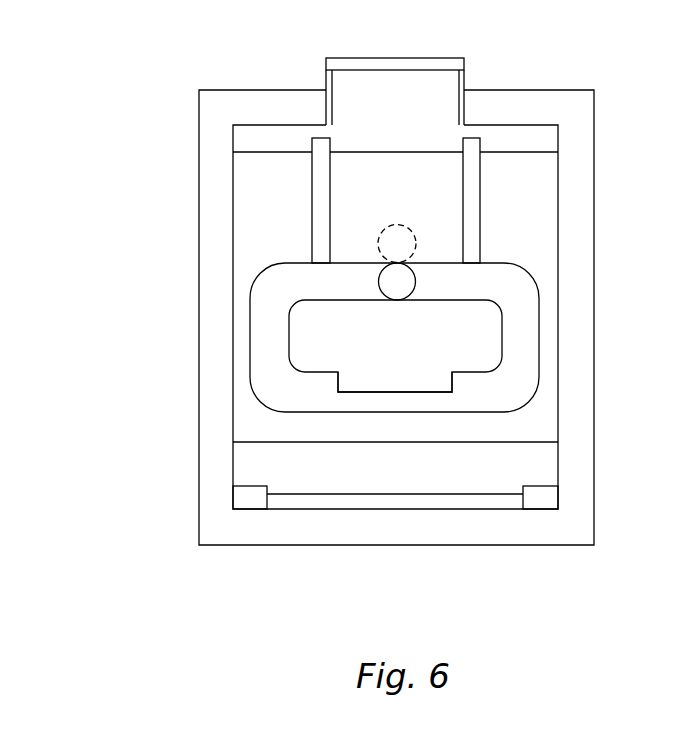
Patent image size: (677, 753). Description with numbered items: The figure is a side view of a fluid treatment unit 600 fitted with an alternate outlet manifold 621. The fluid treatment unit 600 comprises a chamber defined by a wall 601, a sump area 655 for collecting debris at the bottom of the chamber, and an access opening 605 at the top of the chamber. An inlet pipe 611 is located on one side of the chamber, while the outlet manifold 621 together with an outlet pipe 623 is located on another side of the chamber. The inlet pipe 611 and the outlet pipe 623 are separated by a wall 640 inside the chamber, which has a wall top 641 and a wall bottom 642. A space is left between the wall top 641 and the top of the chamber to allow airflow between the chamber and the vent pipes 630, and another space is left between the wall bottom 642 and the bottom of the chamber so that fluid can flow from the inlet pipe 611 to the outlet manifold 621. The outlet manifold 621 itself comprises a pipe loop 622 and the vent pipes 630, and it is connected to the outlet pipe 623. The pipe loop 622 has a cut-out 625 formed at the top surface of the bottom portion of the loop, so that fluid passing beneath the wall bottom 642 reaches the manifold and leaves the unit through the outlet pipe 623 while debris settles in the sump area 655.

The fluid treatment unit 600 is at (426, 313).
The wall 601 is at (537, 89).
The access opening 605 is at (410, 57).
The inlet pipe 611 is at (403, 226).
The outlet manifold 621 is at (540, 333).
The pipe loop 622 is at (512, 360).
The outlet pipe 623 is at (412, 292).
The cut-out 625 is at (380, 391).
The vent pipes 630 is at (480, 192).
The wall 640 is at (380, 194).
The wall top 641 is at (388, 151).
The wall bottom 642 is at (344, 443).
The sump area 655 is at (410, 493).